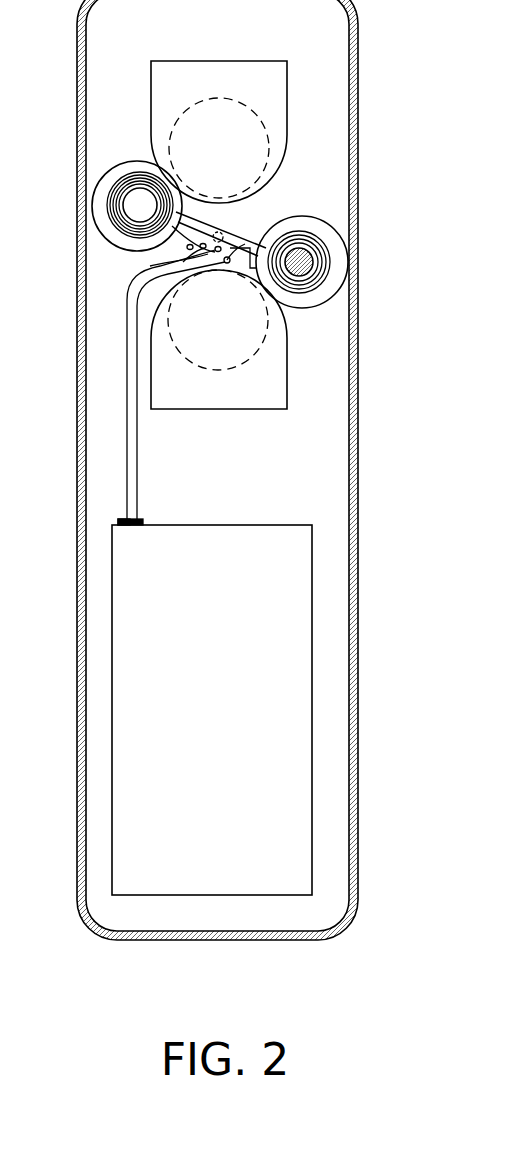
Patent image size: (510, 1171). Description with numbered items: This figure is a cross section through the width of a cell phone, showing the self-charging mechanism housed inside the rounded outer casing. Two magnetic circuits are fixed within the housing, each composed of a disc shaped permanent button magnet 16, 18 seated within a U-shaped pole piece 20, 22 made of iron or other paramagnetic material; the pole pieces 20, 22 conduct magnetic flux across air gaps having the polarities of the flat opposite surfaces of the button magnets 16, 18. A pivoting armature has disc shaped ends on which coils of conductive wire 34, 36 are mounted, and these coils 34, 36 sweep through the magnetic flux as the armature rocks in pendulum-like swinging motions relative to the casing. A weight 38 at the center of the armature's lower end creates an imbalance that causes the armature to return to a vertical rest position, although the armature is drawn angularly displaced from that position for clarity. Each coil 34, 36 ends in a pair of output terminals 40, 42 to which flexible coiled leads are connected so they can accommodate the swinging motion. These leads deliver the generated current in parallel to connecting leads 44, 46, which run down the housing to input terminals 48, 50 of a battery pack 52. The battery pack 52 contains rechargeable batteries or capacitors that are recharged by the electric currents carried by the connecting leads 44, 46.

The button magnet 16 is at (262, 122).
The button magnet 18 is at (262, 340).
The U-shaped pole piece 20 is at (287, 125).
The U-shaped pole piece 22 is at (288, 385).
The coil of conductive wire 34 is at (115, 195).
The coil of conductive wire 36 is at (328, 283).
The weight 38 is at (312, 250).
The output terminal 40 is at (212, 248).
The output terminal 42 is at (266, 232).
The connecting lead 44 is at (127, 466).
The connecting lead 46 is at (137, 468).
The input terminal 48 is at (120, 520).
The input terminal 50 is at (143, 520).
The battery pack 52 is at (312, 640).